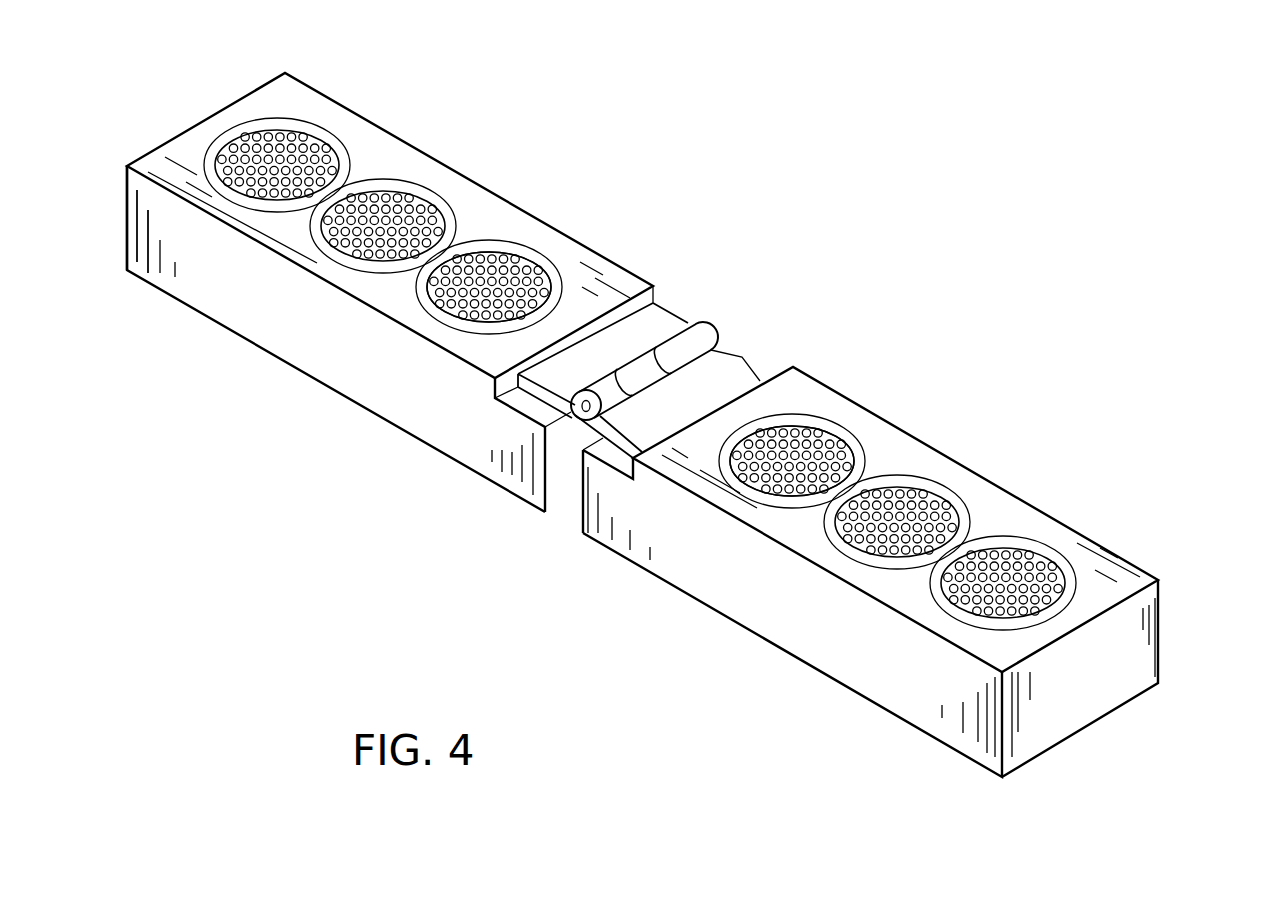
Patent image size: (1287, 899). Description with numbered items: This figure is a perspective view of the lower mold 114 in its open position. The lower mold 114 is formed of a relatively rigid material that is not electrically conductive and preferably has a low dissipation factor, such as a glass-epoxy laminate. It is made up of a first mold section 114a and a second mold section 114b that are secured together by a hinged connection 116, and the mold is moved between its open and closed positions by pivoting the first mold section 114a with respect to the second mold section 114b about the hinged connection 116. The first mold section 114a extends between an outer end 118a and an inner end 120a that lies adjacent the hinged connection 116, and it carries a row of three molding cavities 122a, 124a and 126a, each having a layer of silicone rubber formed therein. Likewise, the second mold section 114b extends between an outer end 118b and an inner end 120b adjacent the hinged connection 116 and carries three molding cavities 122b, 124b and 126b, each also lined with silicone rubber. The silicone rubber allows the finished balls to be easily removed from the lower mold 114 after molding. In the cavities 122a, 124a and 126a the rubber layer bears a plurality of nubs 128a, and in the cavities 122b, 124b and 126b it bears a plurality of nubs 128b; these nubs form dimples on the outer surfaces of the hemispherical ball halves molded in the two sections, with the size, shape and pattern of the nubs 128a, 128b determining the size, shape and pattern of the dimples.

The lower mold 114 is at (851, 330).
The first mold section 114a is at (1018, 487).
The second mold section 114b is at (510, 200).
The hinged connection 116 is at (703, 336).
The outer end 118a is at (1098, 710).
The outer end 118b is at (117, 228).
The inner end 120a is at (580, 517).
The inner end 120b is at (547, 463).
The molding cavity 122a is at (1045, 578).
The molding cavity 122b is at (298, 138).
The molding cavity 124a is at (923, 493).
The molding cavity 124b is at (410, 195).
The molding cavity 126a is at (838, 437).
The molding cavity 126b is at (530, 268).
The nubs 128a is at (782, 487).
The nubs 128b is at (468, 318).